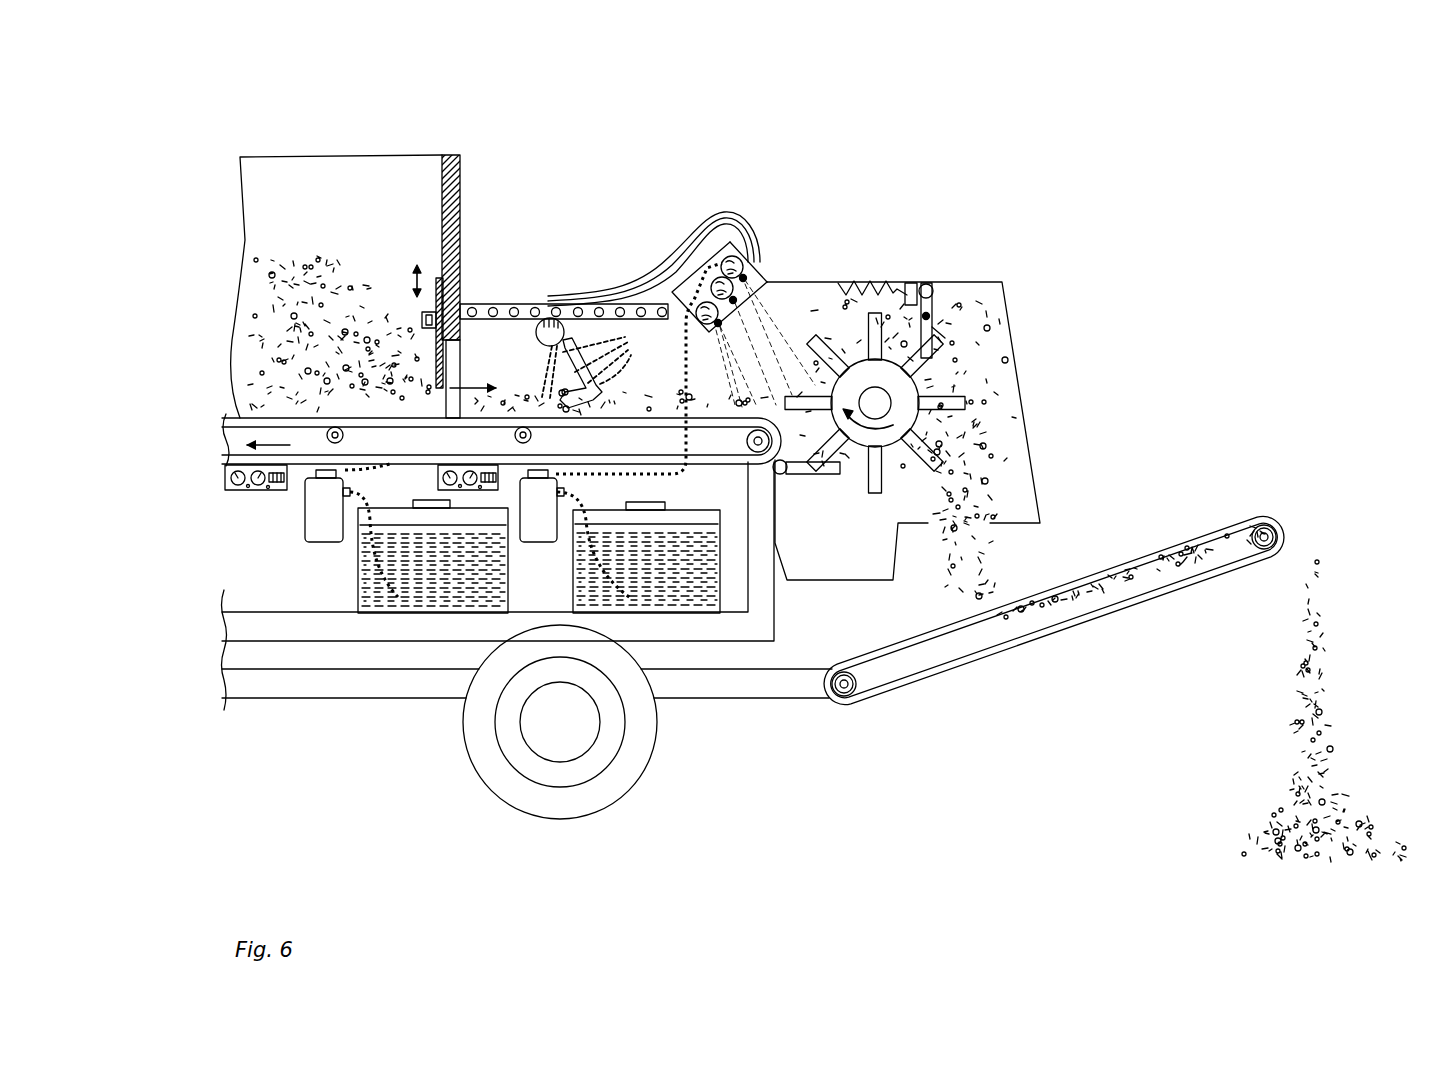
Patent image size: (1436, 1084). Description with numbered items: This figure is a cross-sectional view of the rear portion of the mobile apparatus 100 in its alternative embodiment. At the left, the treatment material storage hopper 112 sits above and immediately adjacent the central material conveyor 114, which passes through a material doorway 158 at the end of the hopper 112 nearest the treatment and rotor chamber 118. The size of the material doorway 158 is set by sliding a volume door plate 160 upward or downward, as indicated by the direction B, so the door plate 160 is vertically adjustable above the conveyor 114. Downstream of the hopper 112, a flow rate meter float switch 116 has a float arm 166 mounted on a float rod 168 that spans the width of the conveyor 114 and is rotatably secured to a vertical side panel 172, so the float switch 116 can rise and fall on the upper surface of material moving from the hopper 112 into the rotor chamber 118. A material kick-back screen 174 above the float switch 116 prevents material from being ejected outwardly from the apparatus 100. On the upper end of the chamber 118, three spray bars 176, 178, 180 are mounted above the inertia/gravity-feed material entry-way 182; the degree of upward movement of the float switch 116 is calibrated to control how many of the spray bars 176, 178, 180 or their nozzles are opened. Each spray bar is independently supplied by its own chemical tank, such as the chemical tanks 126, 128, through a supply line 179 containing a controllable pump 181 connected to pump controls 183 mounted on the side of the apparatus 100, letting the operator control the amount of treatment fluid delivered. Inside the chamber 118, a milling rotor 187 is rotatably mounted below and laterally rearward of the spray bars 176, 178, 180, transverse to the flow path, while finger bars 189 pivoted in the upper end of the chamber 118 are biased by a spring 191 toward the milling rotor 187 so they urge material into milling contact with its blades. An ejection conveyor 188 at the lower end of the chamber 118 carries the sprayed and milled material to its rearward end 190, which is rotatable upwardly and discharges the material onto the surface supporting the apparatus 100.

The mobile apparatus 100 is at (1152, 159).
The treatment material storage hopper 112 is at (462, 200).
The central material conveyor 114 is at (232, 414).
The flow rate meter float switch 116 is at (576, 378).
The treatment and rotor chamber 118 is at (966, 283).
The chemical tank 126 is at (412, 577).
The chemical tank 128 is at (657, 591).
The material doorway 158 is at (452, 358).
The volume door plate 160 is at (438, 276).
The float arm 166 is at (597, 332).
The float rod 168 is at (546, 318).
The vertical side panel 172 is at (647, 347).
The material kick-back screen 174 is at (513, 306).
The spray bar 176 is at (733, 262).
The spray bar 178 is at (768, 283).
The supply line 179 is at (672, 473).
The spray bar 180 is at (746, 282).
The controllable pump 181 is at (533, 520).
The material entry-way 182 is at (709, 334).
The pump controls 183 is at (457, 487).
The milling rotor 187 is at (942, 402).
The ejection conveyor 188 is at (1055, 632).
The finger bars 189 is at (931, 302).
The rearward end 190 is at (1266, 518).
The spring 191 is at (866, 302).
The upward or downward adjustment B is at (412, 280).